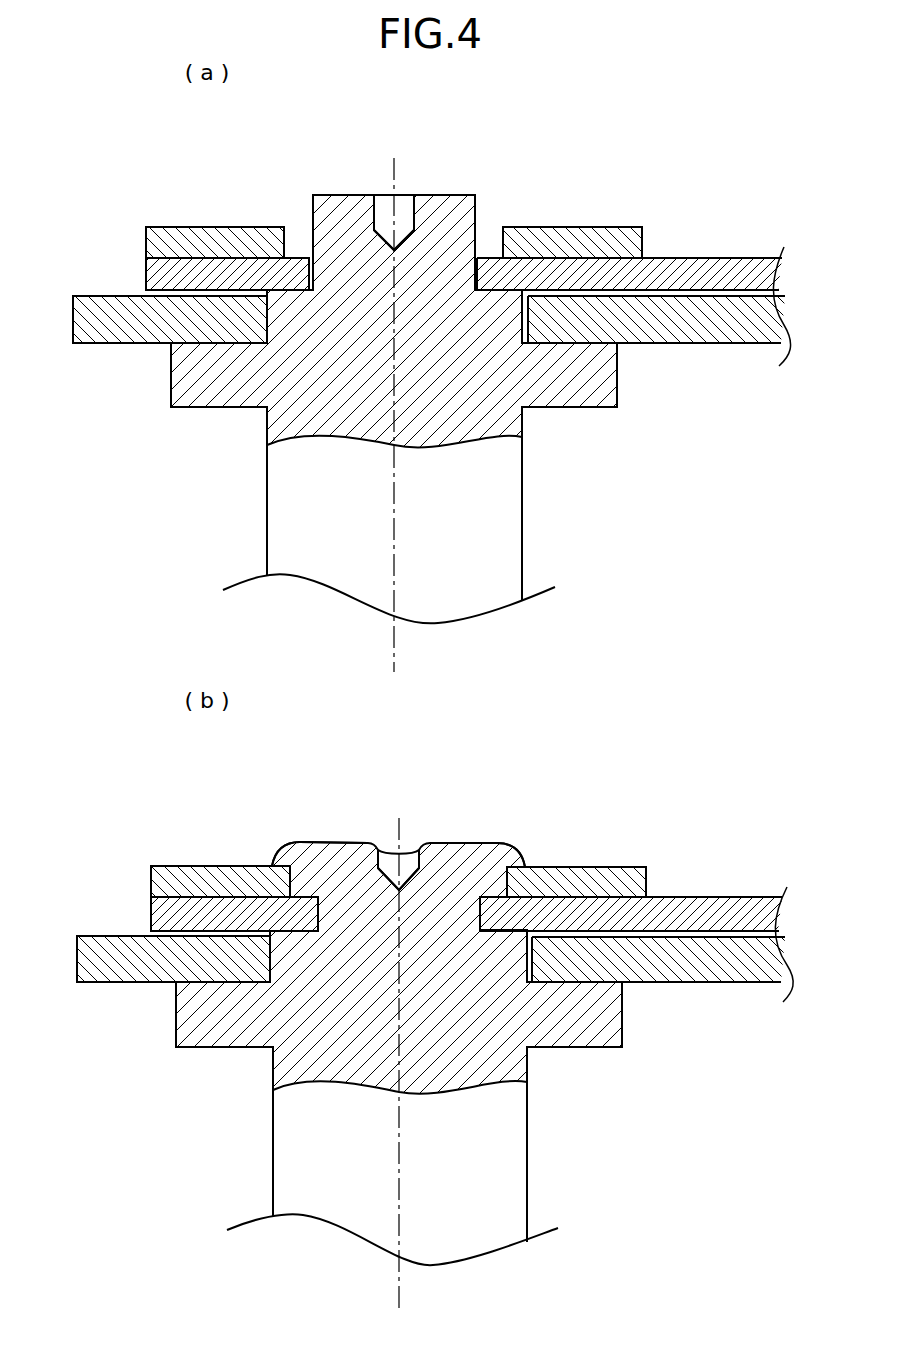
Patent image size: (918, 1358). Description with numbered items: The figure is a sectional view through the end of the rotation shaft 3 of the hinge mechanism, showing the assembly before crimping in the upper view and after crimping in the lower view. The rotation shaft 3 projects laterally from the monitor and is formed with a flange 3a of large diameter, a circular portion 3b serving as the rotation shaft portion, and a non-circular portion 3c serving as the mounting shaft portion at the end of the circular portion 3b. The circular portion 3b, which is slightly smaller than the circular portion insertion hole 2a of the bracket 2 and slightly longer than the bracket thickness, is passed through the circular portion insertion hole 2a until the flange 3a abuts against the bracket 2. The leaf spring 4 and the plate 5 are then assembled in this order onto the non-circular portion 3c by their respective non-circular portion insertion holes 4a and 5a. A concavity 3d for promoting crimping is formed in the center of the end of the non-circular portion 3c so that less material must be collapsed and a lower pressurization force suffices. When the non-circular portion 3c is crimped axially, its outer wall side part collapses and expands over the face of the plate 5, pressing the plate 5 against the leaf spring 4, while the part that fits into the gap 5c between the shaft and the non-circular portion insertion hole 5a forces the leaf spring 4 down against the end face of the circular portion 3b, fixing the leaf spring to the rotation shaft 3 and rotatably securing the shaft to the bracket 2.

The bracket 2 is at (688, 330).
The circular portion insertion hole 2a is at (527, 324).
The rotation shaft 3 is at (510, 540).
The flange 3a is at (210, 395).
The circular portion 3b is at (298, 303).
The non-circular portion 3c is at (356, 240).
The concavity for promoting crimping 3d is at (385, 205).
The leaf spring 4 is at (724, 268).
The non-circular portion insertion hole 4a is at (477, 275).
The plate 5 is at (597, 240).
The non-circular portion insertion hole 5a is at (497, 243).
The gap 5c is at (483, 245).